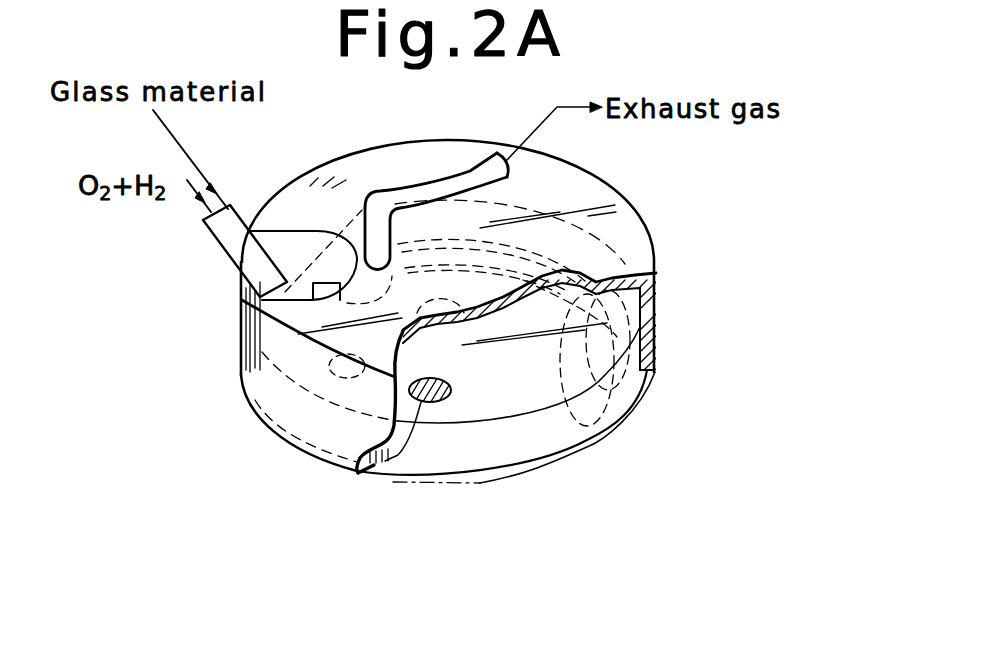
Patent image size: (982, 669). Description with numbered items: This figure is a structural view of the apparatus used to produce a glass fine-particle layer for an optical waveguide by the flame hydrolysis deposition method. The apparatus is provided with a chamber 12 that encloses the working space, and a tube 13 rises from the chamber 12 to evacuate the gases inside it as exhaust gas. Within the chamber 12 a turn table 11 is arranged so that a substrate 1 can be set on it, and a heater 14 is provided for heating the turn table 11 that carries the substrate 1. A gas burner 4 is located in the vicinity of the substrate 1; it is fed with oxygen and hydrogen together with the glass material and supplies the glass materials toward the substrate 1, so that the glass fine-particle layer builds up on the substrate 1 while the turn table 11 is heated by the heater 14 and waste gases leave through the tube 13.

The substrate 1 is at (335, 383).
The gas burner 4 is at (225, 258).
The turn table 11 is at (527, 447).
The chamber 12 is at (636, 194).
The tube 13 is at (383, 190).
The heater 14 is at (578, 427).